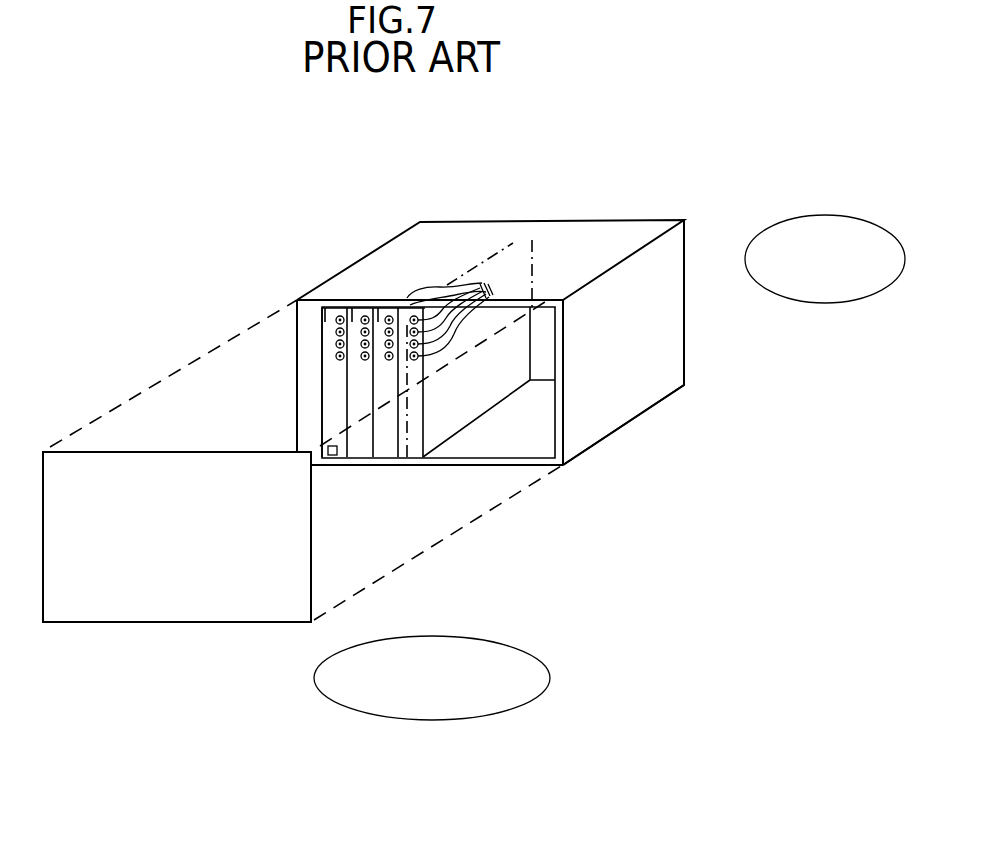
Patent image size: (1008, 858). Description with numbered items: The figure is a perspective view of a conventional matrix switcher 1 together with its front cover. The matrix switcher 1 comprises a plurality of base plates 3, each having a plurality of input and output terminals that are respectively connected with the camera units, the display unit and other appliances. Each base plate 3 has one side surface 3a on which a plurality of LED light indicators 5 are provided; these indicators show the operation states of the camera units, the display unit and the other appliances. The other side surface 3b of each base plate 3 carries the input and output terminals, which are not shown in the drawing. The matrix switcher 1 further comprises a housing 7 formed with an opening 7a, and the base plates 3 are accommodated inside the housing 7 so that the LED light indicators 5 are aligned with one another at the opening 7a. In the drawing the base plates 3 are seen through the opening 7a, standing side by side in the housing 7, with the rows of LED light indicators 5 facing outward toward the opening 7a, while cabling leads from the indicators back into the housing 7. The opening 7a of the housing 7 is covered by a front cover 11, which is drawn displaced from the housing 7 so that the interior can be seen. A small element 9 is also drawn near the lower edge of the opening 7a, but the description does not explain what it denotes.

The matrix switcher 1 is at (638, 445).
The base plate 3 is at (358, 248).
The one side surface 3a is at (432, 406).
The other side surface 3b is at (528, 230).
The LED light indicator 5 is at (460, 307).
The housing 7 is at (670, 275).
The opening 7a is at (563, 464).
The lock member 9 is at (338, 455).
The front cover 11 is at (287, 593).